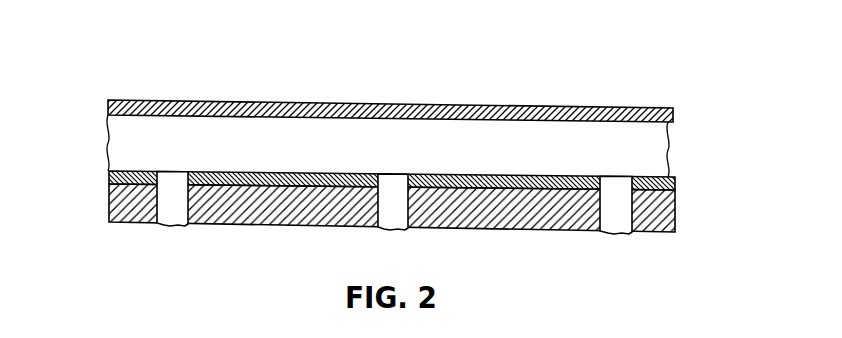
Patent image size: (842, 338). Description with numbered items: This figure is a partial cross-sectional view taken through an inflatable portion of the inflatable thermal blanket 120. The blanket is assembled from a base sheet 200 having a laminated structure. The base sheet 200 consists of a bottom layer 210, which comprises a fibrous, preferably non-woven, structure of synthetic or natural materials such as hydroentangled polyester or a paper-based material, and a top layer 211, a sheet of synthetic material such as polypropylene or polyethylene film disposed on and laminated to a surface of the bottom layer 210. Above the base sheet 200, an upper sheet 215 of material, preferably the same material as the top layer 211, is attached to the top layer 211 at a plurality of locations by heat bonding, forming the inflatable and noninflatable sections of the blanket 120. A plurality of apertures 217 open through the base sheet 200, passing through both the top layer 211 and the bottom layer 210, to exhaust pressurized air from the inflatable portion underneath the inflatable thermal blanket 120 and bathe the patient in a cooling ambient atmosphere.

The inflatable thermal blanket 120 is at (214, 80).
The base sheet 200 is at (100, 170).
The bottom layer 210 is at (128, 224).
The top layer 211 is at (136, 170).
The upper sheet 215 is at (560, 106).
The apertures 217 is at (397, 182).